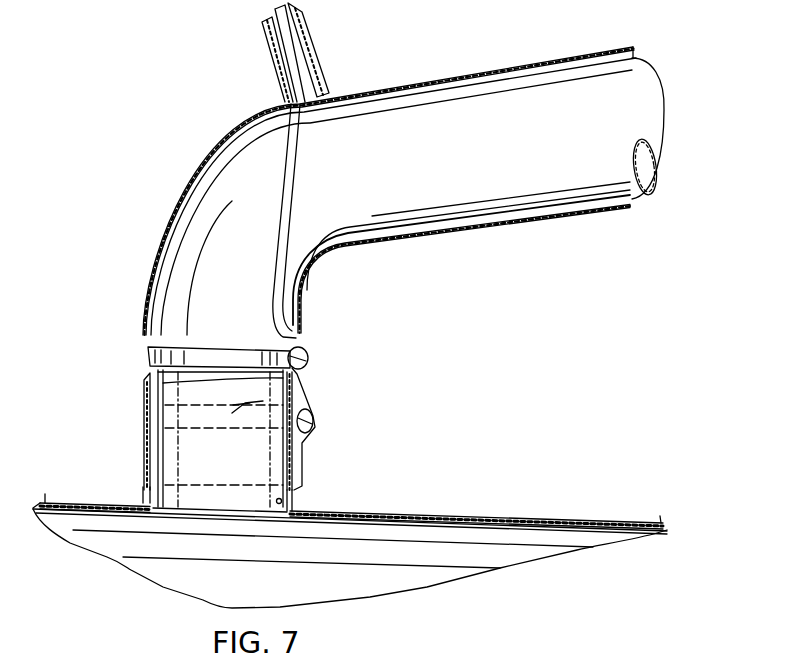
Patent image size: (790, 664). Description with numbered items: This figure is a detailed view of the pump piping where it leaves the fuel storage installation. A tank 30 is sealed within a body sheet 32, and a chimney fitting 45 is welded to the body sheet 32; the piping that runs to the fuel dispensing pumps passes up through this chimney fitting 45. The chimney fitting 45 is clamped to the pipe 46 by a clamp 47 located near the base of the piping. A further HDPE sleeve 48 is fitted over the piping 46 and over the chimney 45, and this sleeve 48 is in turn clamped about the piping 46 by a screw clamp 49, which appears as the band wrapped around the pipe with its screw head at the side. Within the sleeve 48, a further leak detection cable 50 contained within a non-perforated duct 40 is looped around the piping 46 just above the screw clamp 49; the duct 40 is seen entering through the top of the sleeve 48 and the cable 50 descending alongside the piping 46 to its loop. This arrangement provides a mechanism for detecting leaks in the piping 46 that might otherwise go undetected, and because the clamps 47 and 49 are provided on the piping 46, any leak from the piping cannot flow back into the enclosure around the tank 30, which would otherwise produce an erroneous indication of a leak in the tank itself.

The tank 30 is at (517, 535).
The body sheet 32 is at (412, 514).
The non-perforated duct 40 is at (315, 50).
The chimney fitting 45 is at (282, 501).
The pipe 46 is at (178, 231).
The clamp 47 is at (297, 392).
The HDPE sleeve 48 is at (350, 252).
The screw clamp 49 is at (210, 362).
The leak detection cable 50 is at (287, 150).